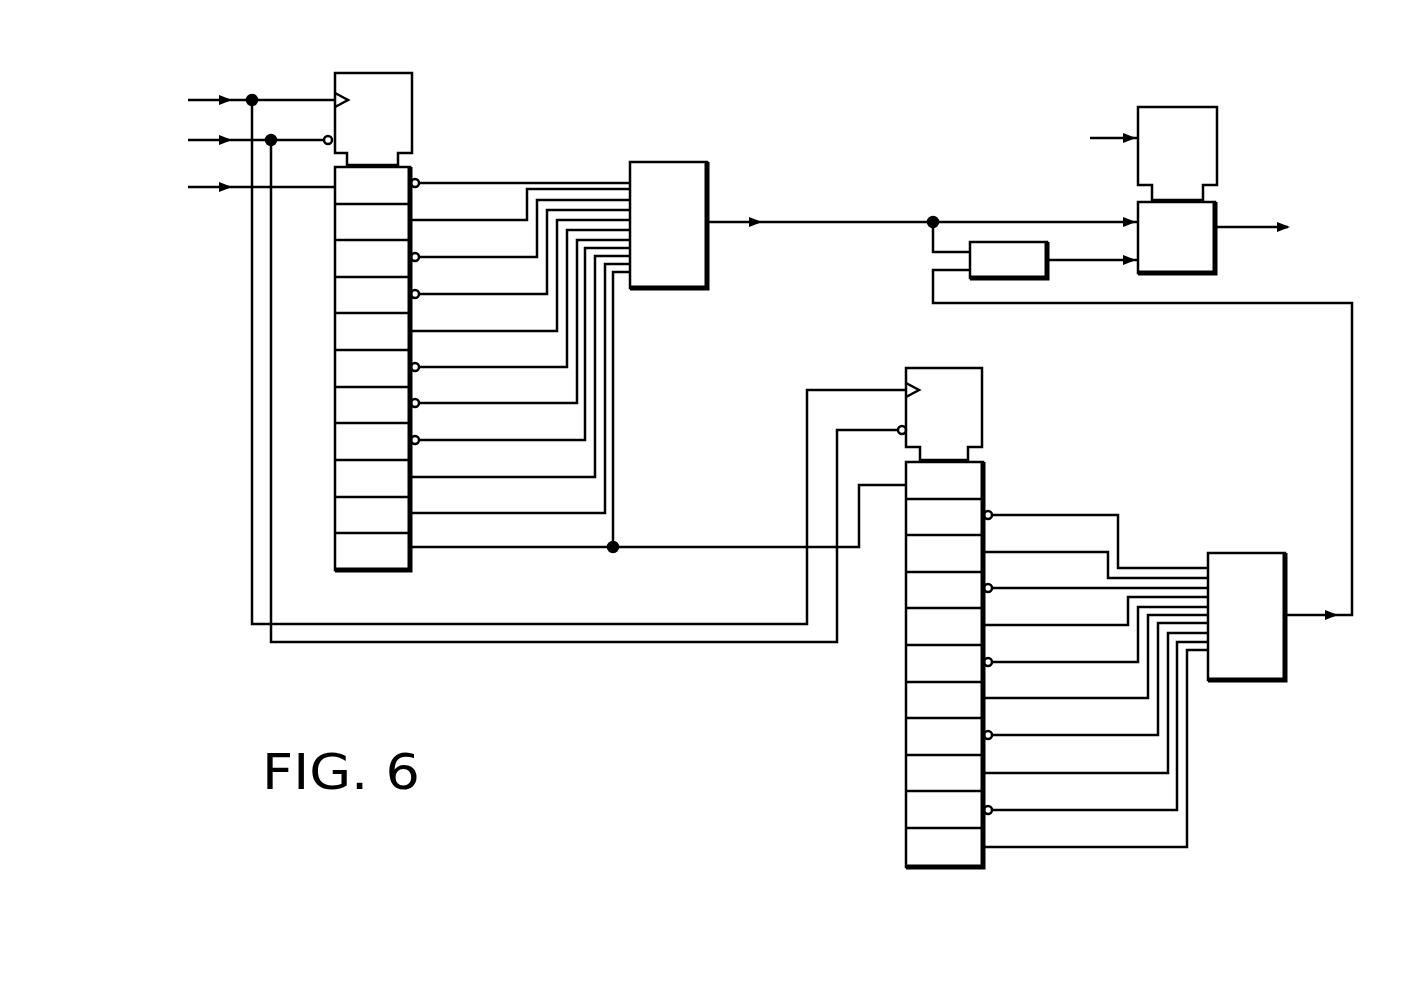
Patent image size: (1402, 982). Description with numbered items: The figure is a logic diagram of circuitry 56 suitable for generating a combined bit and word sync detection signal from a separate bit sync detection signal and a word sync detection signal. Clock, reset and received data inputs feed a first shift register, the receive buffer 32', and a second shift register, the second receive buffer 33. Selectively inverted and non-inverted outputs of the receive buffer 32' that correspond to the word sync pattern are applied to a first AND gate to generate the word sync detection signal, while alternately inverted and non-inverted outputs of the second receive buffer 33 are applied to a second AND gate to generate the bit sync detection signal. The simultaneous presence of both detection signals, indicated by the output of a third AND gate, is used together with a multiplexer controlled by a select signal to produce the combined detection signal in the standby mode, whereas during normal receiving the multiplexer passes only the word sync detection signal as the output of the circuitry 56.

The RECBUF shift register 32' is at (376, 300).
The RECBUF2 shift register 33 is at (906, 784).
The circuitry for generating the Bit and Word Sync Detection Signal 56 is at (873, 160).